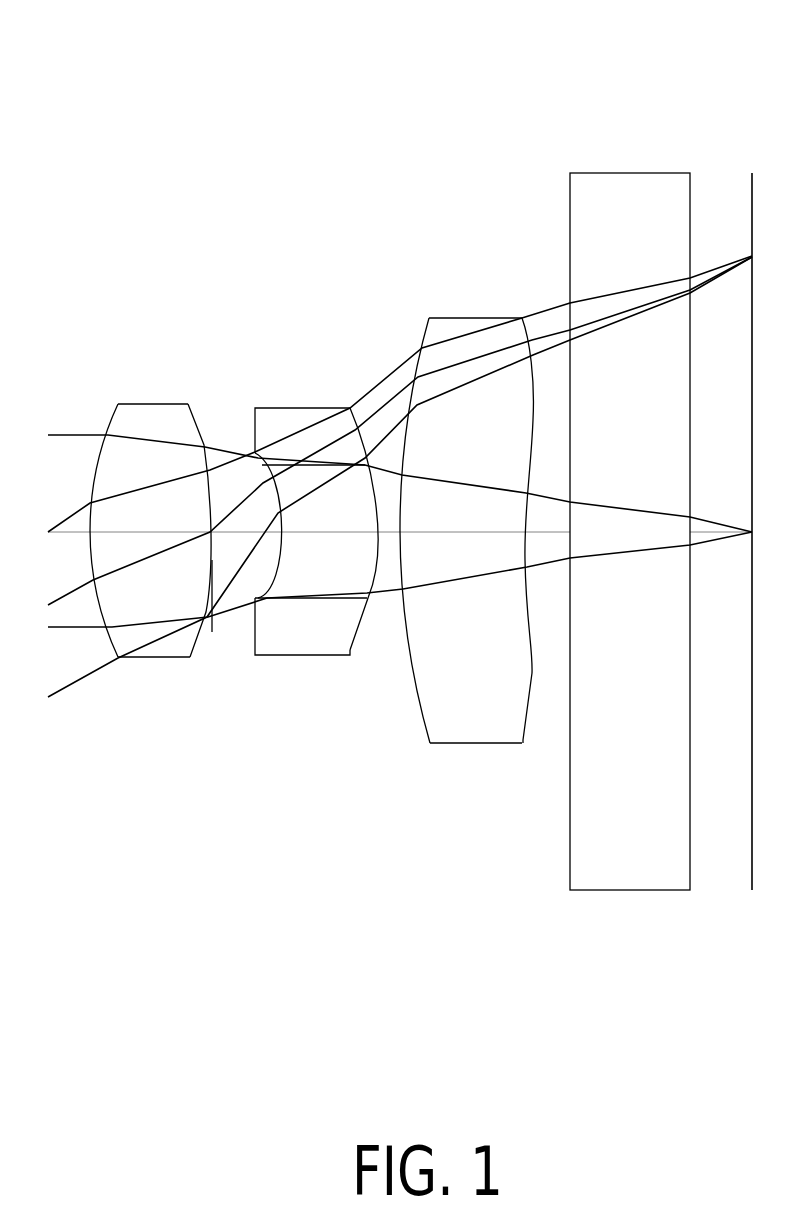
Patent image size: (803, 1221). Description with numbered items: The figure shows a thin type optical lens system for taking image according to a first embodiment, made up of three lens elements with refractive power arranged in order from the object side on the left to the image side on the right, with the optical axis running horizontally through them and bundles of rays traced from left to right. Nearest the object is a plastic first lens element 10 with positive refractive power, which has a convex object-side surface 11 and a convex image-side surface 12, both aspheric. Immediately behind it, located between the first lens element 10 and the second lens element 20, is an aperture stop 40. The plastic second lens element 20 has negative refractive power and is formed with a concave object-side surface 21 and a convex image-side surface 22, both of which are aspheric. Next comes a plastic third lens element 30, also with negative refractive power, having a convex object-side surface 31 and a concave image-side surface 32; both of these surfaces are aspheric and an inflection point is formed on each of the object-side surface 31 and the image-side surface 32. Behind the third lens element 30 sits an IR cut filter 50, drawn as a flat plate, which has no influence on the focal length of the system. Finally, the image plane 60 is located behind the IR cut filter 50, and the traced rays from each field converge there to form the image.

The first lens element 10 is at (121, 519).
The object-side surface 11 is at (92, 588).
The image-side surface 12 is at (208, 557).
The second lens element 20 is at (315, 523).
The object-side surface 21 is at (278, 567).
The image-side surface 22 is at (370, 593).
The third lens element 30 is at (492, 559).
The object-side surface 31 is at (420, 682).
The image-side surface 32 is at (535, 688).
The aperture stop 40 is at (212, 445).
The IR cut filter 50 is at (632, 198).
The image plane 60 is at (745, 198).